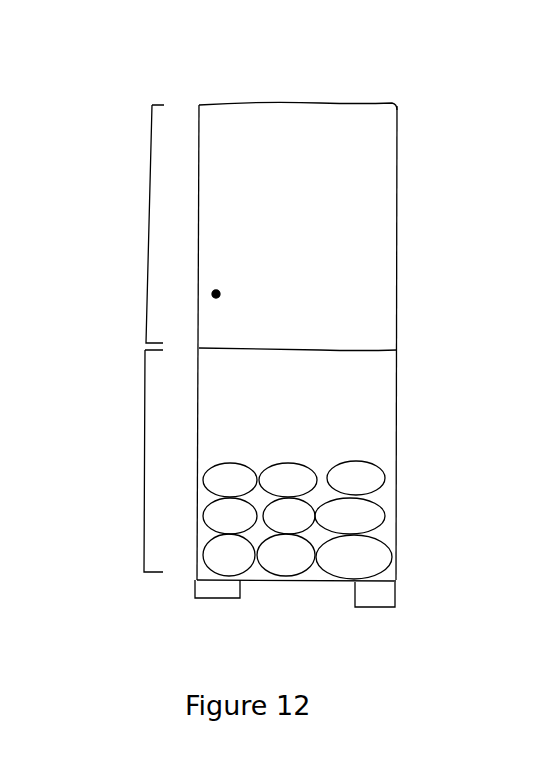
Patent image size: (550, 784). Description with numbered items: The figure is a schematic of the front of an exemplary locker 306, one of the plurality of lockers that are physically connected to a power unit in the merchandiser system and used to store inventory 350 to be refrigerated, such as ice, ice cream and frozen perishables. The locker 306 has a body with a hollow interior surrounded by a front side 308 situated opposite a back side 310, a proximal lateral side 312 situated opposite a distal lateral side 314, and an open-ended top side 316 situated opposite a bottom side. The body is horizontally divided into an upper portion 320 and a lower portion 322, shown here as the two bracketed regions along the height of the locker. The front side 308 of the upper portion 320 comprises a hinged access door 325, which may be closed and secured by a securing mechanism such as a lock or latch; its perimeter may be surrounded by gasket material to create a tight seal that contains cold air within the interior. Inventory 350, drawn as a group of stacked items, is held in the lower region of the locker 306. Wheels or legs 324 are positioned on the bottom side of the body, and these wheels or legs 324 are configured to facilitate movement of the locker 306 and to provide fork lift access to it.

The locker 306 is at (436, 55).
The open-ended top side 316 is at (317, 103).
The front side 308 is at (380, 190).
The hinged access door 325 is at (368, 277).
The proximal lateral side 312 is at (197, 401).
The distal lateral side 314 is at (397, 410).
The upper portion 320 is at (148, 223).
The lower portion 322 is at (138, 470).
The inventory 350 is at (372, 483).
The back side 310 is at (397, 542).
The wheels or legs 324 is at (380, 598).